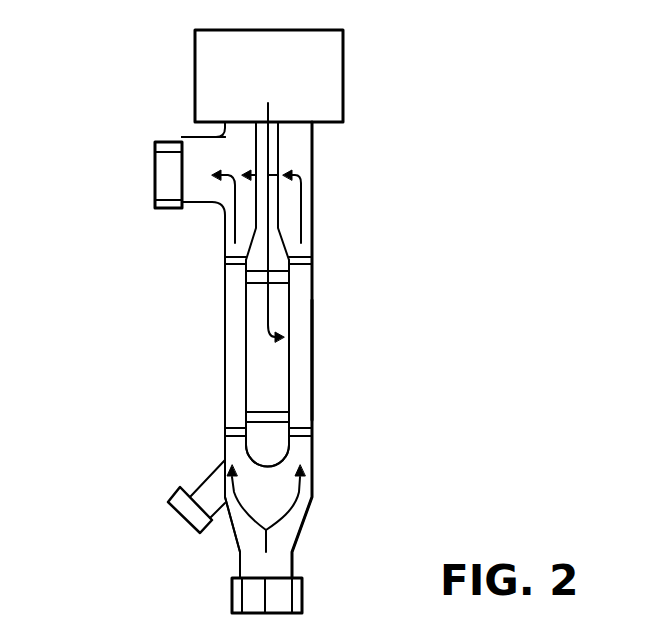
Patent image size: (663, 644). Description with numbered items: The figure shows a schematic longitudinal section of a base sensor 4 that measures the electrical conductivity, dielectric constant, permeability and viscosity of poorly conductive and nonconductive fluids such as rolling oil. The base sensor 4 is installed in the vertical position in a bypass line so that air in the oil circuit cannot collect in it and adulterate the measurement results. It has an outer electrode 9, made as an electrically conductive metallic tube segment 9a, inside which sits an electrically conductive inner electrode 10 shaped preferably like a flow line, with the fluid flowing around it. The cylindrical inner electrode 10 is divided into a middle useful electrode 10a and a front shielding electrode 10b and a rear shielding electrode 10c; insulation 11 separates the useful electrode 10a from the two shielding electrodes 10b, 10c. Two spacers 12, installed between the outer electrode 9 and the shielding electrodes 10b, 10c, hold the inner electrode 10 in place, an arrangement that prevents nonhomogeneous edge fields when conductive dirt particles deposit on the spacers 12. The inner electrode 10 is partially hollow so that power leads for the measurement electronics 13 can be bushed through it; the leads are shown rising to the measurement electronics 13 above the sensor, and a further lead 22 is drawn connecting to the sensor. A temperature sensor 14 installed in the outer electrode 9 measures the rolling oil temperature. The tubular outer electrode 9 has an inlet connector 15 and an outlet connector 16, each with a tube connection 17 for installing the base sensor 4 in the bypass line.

The base sensor 4 is at (365, 148).
The outer electrode 9 is at (313, 322).
The metallic tube segment 9a is at (313, 368).
The inner electrode 10 is at (243, 305).
The useful electrode 10a is at (250, 348).
The front shielding electrode 10b is at (260, 464).
The rear shielding electrode 10c is at (278, 248).
The insulation 11 is at (283, 277).
The spacer 12 is at (225, 260).
The measurement electronics 13 is at (200, 45).
The temperature sensor 14 is at (203, 485).
The inlet connector 15 is at (275, 562).
The outlet connector 16 is at (193, 157).
The tube connection 17 is at (167, 163).
The lead wire 22 is at (256, 138).